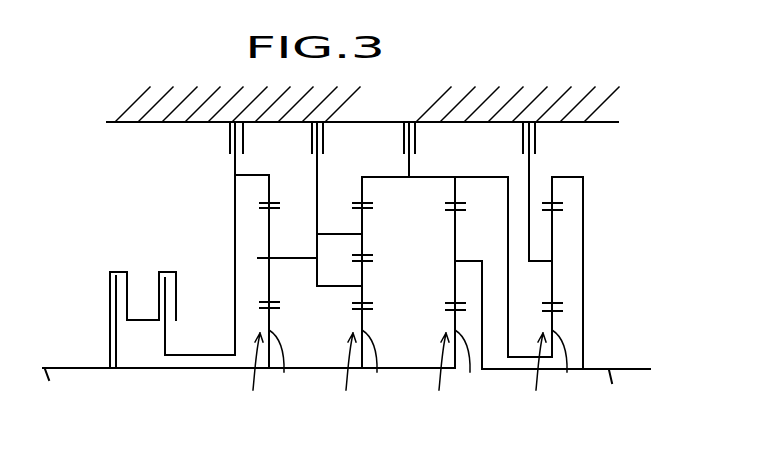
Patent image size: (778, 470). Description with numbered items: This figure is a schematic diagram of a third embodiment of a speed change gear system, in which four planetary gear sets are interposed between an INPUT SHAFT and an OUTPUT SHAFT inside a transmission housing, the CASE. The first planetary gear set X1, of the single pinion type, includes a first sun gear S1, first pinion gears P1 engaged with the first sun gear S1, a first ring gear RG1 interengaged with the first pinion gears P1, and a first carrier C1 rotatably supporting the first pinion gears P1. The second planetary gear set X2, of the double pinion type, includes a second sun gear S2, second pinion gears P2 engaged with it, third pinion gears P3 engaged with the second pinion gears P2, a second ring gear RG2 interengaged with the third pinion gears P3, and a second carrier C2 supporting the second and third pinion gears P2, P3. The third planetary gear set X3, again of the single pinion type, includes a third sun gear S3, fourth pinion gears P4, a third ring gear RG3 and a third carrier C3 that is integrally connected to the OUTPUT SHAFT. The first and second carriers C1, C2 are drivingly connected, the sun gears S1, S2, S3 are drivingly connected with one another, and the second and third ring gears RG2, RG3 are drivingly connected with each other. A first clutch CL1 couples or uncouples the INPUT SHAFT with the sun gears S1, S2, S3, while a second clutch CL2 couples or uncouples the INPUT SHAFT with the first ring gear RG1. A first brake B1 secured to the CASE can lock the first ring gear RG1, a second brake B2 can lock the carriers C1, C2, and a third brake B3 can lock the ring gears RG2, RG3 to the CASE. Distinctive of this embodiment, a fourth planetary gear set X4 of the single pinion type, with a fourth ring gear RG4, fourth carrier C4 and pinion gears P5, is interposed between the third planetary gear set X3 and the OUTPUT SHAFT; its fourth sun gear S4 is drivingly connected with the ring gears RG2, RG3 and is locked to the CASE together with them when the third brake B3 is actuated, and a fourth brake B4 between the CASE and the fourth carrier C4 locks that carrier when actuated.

The case CASE is at (363, 105).
The first brake B1 is at (220, 238).
The second brake B2 is at (298, 204).
The third brake B3 is at (458, 239).
The fourth brake B4 is at (510, 191).
The first clutch CL1 is at (122, 302).
The second clutch CL2 is at (197, 296).
The first ring gear RG1 is at (264, 190).
The second ring gear RG2 is at (361, 195).
The third ring gear RG3 is at (455, 196).
The fourth ring gear RG4 is at (553, 194).
The first carrier C1 is at (294, 258).
The second carrier C2 is at (334, 235).
The third carrier C3 is at (469, 261).
The fourth carrier C4 is at (548, 261).
The first pinion gears P1 is at (270, 300).
The second pinion gears P2 is at (364, 295).
The third pinion gears P3 is at (364, 245).
The fourth pinion gears P4 is at (455, 278).
The fifth planet gear P5 is at (553, 288).
The first sun gear S1 is at (287, 367).
The second sun gear S2 is at (380, 367).
The third sun gear S3 is at (473, 368).
The fourth sun gear S4 is at (573, 368).
The first planetary gear set X1 is at (264, 379).
The second planetary gear set X2 is at (355, 379).
The third planetary gear set X3 is at (450, 383).
The fourth planetary gear set X4 is at (552, 383).
The input shaft INPUT SHAFT is at (248, 401).
The output shaft OUTPUT SHAFT is at (601, 403).